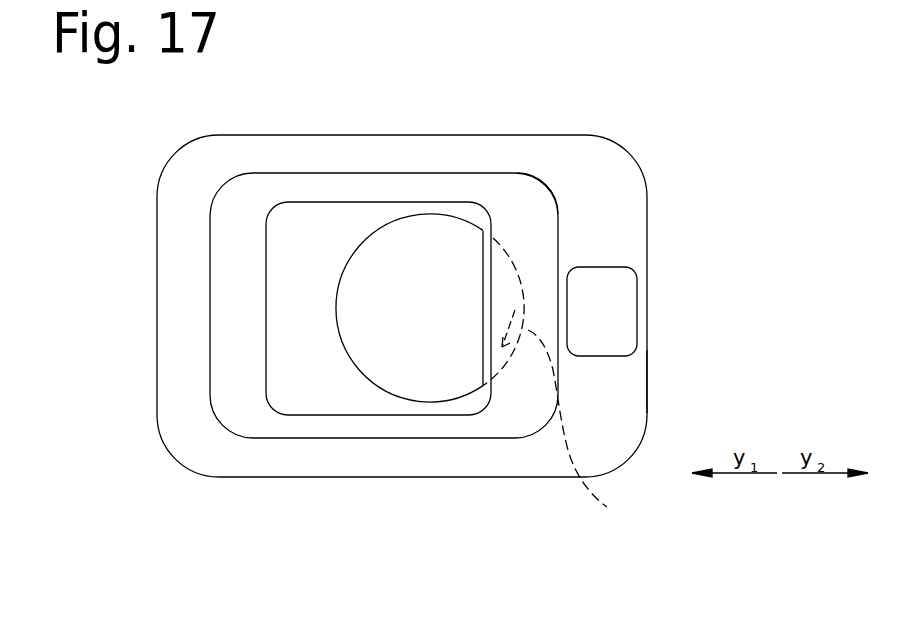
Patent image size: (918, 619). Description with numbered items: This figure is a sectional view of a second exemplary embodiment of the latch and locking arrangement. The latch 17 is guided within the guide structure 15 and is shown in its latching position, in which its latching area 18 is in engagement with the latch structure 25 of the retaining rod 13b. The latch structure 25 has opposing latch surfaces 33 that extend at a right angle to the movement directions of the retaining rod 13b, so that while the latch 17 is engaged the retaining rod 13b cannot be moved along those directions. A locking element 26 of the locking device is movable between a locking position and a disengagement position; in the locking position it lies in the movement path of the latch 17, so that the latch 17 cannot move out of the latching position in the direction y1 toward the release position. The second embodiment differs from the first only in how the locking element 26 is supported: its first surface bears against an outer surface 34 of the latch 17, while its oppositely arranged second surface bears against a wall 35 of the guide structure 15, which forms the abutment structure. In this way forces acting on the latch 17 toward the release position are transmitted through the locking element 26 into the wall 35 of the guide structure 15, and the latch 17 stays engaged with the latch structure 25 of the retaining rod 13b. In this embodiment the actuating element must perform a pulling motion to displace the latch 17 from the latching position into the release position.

The guide structure 15 is at (647, 337).
The wall 35 is at (647, 387).
The latch 17 is at (373, 188).
The outer surface 34 is at (562, 210).
The latching area 18 is at (507, 295).
The retaining rod 13b is at (410, 367).
The latch structure 25 is at (487, 279).
The latch surfaces 33 is at (579, 435).
The locking element 26 is at (600, 310).